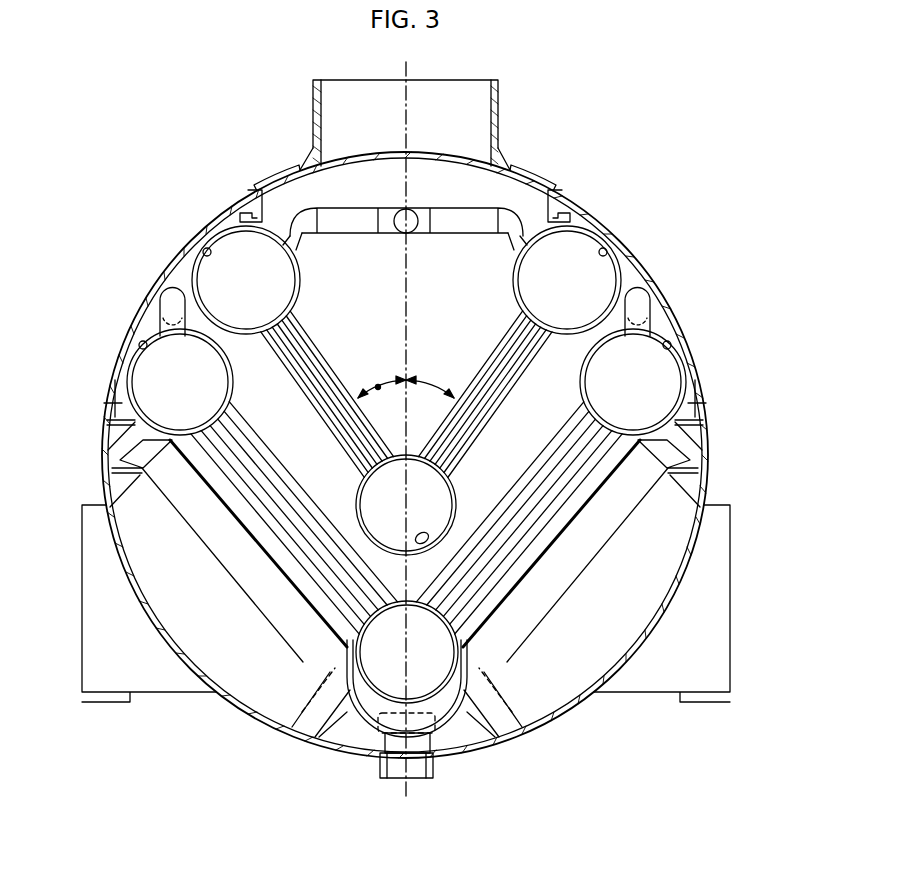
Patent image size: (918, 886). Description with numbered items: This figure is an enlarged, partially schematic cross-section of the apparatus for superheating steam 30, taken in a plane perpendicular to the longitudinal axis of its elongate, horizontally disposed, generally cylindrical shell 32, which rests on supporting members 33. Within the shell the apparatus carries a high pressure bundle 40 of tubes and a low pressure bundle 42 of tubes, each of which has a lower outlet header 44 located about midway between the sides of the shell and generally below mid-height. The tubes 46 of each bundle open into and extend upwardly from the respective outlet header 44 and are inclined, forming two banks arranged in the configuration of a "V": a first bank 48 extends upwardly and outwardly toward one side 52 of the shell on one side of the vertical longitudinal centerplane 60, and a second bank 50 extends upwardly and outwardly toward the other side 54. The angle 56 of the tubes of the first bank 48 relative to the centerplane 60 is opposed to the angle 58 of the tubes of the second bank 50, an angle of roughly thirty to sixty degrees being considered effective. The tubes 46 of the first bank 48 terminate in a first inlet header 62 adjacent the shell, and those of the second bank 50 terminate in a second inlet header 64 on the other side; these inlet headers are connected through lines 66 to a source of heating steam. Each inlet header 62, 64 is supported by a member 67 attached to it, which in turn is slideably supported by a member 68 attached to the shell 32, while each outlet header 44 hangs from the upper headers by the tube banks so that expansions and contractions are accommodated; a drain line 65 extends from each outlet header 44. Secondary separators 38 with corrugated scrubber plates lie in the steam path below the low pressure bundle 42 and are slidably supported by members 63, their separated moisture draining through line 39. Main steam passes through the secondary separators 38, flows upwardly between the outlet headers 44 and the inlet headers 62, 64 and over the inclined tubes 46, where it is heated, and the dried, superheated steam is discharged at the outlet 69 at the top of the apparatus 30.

The apparatus for superheating steam 30 is at (572, 109).
The shell 32 is at (643, 262).
The members 33 is at (110, 665).
The secondary separators 38 is at (193, 503).
The line 39 is at (380, 770).
The high pressure bundle of tubes 40 is at (327, 352).
The low pressure bundle of tubes 42 is at (300, 572).
The outlet header 44 is at (356, 510).
The tubes 46 is at (311, 338).
The first bank of tubes 48 is at (558, 437).
The second bank of tubes 50 is at (297, 378).
The one side of the shell 52 is at (706, 433).
The other side of the shell 54 is at (104, 433).
The angle 56 is at (410, 380).
The angle 58 is at (378, 386).
The vertical longitudinal centerplane 60 is at (406, 287).
The first inlet header 62 is at (606, 250).
The members 63 is at (112, 487).
The second inlet header 64 is at (205, 250).
The drain line 65 is at (302, 713).
The lines 66 is at (360, 217).
The member 67 is at (230, 218).
The member 68 is at (257, 197).
The outlet 69 is at (499, 110).